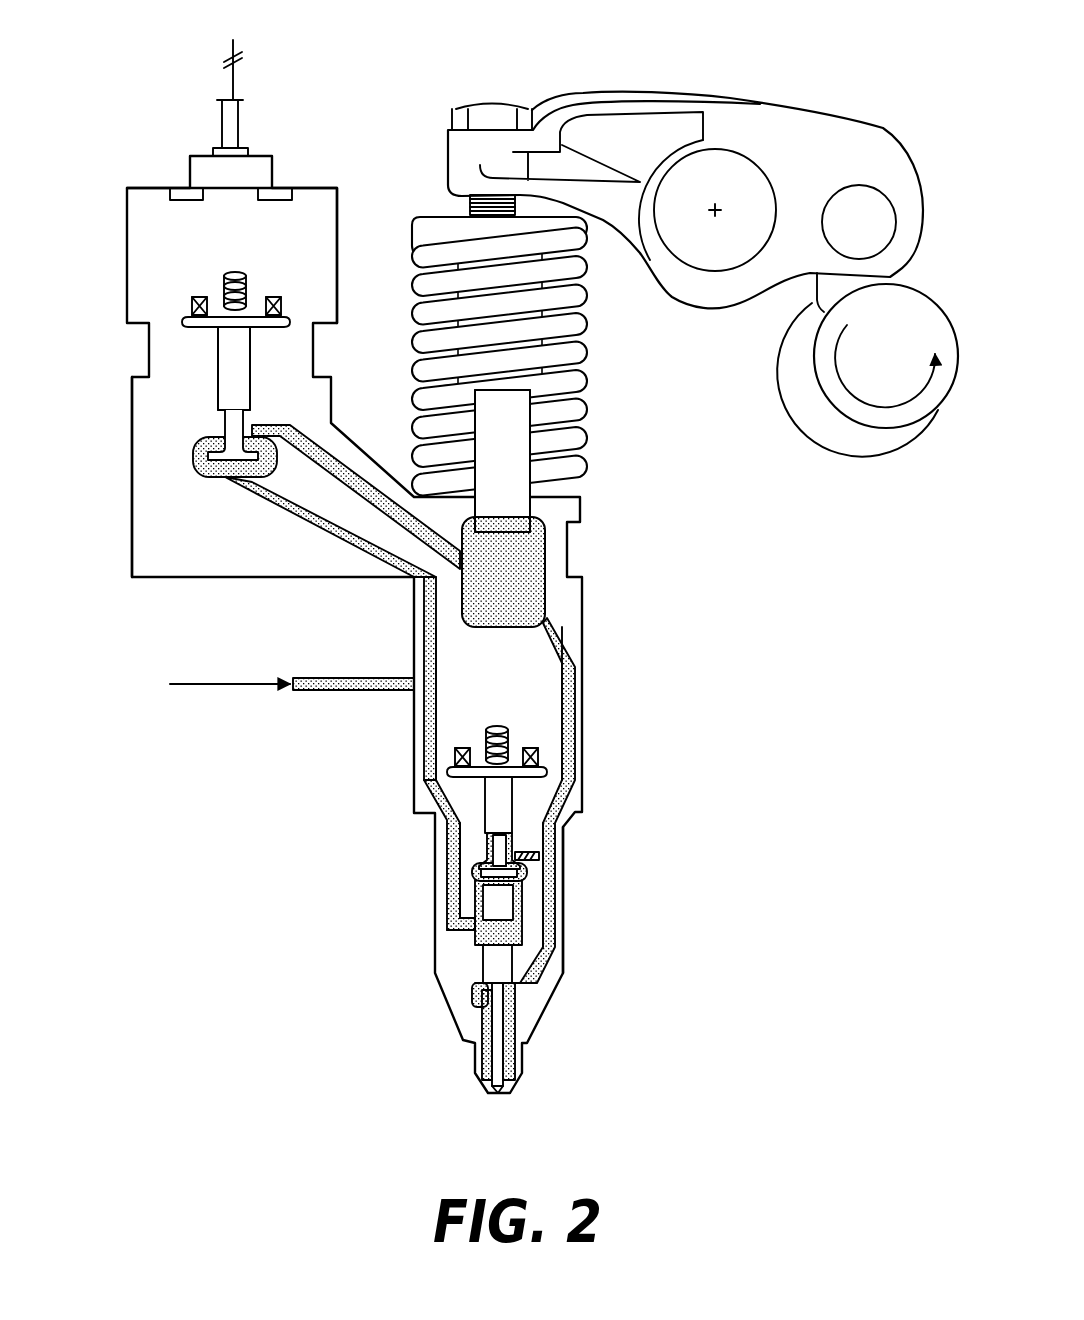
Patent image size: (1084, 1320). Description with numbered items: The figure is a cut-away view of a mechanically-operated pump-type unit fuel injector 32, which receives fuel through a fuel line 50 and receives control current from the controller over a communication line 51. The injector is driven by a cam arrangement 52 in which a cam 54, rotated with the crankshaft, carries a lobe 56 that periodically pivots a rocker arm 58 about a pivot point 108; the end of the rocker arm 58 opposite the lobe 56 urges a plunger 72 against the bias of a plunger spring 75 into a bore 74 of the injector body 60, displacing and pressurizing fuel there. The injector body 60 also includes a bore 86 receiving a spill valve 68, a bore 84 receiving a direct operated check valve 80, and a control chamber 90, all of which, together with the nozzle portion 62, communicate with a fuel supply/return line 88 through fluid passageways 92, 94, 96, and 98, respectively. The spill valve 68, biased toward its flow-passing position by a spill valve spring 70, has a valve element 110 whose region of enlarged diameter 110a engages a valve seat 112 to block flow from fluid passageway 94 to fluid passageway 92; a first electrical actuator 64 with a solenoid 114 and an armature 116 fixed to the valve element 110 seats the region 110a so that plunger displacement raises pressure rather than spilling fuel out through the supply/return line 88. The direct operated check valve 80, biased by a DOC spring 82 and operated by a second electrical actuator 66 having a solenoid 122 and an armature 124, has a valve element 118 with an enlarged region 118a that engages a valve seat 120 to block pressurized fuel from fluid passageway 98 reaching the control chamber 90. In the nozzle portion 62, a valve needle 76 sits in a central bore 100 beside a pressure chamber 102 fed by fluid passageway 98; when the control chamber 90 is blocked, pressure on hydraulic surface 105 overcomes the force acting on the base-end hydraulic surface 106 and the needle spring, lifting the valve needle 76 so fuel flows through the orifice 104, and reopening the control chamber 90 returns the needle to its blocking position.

The fuel injector 32 is at (682, 606).
The fuel line 50 is at (228, 684).
The communication line 51 is at (234, 72).
The cam arrangement 52 is at (680, 47).
The cam 54 is at (903, 369).
The lobe 56 is at (836, 425).
The rocker arm 58 is at (825, 180).
The injector body 60 is at (582, 572).
The nozzle portion 62 is at (578, 920).
The first electrical actuator 64 is at (166, 211).
The second electrical actuator 66 is at (535, 735).
The spill valve 68 is at (162, 425).
The spill valve spring 70 is at (236, 272).
The plunger 72 is at (520, 500).
The bore 74 is at (526, 420).
The plunger spring 75 is at (578, 332).
The valve needle 76 is at (500, 995).
The direct operated check (DOC) valve 80 is at (532, 805).
The DOC spring 82 is at (497, 724).
The bore 84 is at (505, 795).
The bore 86 is at (250, 362).
The fuel supply/return line 88 is at (316, 690).
The control chamber 90 is at (475, 870).
The fluid passageway 92 is at (332, 536).
The fluid passageway 94 is at (368, 486).
The fluid passageway 96 is at (436, 668).
The fluid passageway 98 is at (550, 630).
The central bore 100 is at (480, 1040).
The pressure chamber 102 is at (528, 1006).
The orifice 104 is at (496, 1094).
The hydraulic surface 105 is at (490, 1000).
The hydraulic surface 106 is at (525, 885).
The pivot point 108 is at (715, 214).
The valve element 110 is at (218, 350).
The region of enlarged diameter 110a is at (205, 480).
The valve seat 112 is at (222, 436).
The solenoid 114 is at (278, 300).
The armature 116 is at (195, 312).
The valve element 118 is at (505, 836).
The region of enlarged diameter 118a is at (480, 856).
The valve seat 120 is at (490, 866).
The solenoid 122 is at (470, 746).
The armature 124 is at (430, 800).